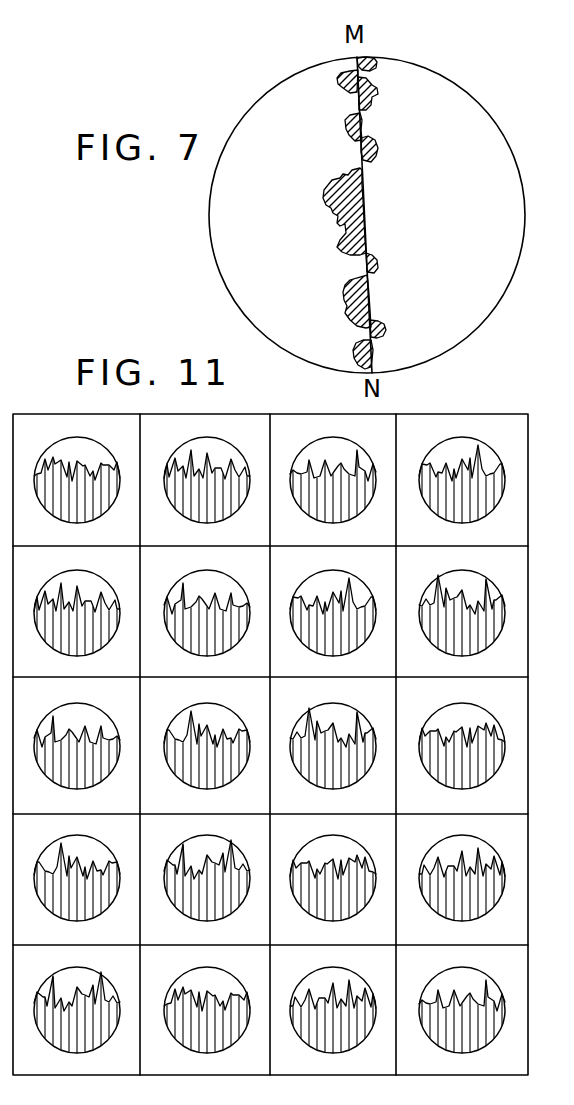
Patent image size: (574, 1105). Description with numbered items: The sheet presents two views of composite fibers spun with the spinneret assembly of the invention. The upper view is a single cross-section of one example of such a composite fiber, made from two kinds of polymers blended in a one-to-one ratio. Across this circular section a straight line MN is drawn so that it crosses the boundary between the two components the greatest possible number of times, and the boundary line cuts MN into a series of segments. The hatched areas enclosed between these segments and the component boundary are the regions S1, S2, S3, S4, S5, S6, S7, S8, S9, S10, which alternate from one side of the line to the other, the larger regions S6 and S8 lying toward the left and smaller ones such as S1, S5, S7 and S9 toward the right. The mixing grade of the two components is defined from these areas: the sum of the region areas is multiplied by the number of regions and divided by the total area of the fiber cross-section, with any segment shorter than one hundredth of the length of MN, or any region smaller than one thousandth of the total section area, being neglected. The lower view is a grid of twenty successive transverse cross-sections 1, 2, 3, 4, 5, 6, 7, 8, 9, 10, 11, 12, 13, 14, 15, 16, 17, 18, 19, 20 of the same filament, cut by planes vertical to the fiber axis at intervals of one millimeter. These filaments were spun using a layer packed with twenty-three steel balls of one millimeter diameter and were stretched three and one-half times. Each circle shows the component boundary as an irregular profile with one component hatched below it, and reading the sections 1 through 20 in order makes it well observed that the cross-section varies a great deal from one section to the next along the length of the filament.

In FIG. 7, the region S1 is at (378, 72).
In FIG. 7, the region S2 is at (338, 91).
In FIG. 7, the region S3 is at (381, 105).
In FIG. 7, the region S4 is at (340, 133).
In FIG. 7, the region S5 is at (383, 152).
In FIG. 7, the region S6 is at (338, 211).
In FIG. 7, the region S7 is at (385, 270).
In FIG. 7, the region S8 is at (343, 301).
In FIG. 7, the region S9 is at (392, 334).
In FIG. 7, the region S10 is at (342, 351).
In FIG. 11, the successive cross-section 1 is at (77, 493).
In FIG. 11, the successive cross-section 2 is at (77, 624).
In FIG. 11, the successive cross-section 3 is at (77, 757).
In FIG. 11, the successive cross-section 4 is at (77, 890).
In FIG. 11, the successive cross-section 5 is at (77, 1021).
In FIG. 11, the successive cross-section 6 is at (207, 493).
In FIG. 11, the successive cross-section 7 is at (207, 624).
In FIG. 11, the successive cross-section 8 is at (207, 757).
In FIG. 11, the successive cross-section 9 is at (207, 890).
In FIG. 11, the successive cross-section 10 is at (207, 1021).
In FIG. 11, the successive cross-section 11 is at (337, 493).
In FIG. 11, the successive cross-section 12 is at (337, 624).
In FIG. 11, the successive cross-section 13 is at (337, 757).
In FIG. 11, the successive cross-section 14 is at (337, 890).
In FIG. 11, the successive cross-section 15 is at (337, 1021).
In FIG. 11, the successive cross-section 16 is at (466, 493).
In FIG. 11, the successive cross-section 17 is at (466, 624).
In FIG. 11, the successive cross-section 18 is at (466, 757).
In FIG. 11, the successive cross-section 19 is at (466, 890).
In FIG. 11, the successive cross-section 20 is at (465, 1021).